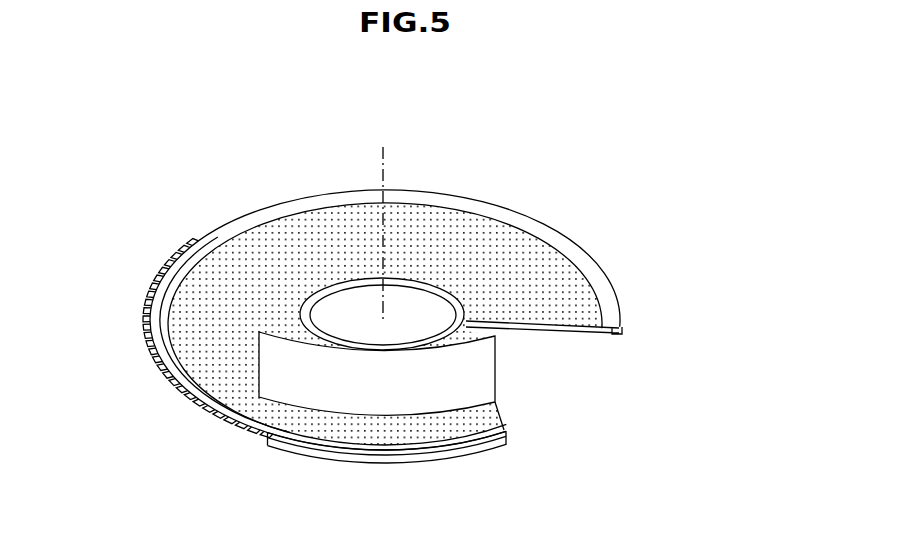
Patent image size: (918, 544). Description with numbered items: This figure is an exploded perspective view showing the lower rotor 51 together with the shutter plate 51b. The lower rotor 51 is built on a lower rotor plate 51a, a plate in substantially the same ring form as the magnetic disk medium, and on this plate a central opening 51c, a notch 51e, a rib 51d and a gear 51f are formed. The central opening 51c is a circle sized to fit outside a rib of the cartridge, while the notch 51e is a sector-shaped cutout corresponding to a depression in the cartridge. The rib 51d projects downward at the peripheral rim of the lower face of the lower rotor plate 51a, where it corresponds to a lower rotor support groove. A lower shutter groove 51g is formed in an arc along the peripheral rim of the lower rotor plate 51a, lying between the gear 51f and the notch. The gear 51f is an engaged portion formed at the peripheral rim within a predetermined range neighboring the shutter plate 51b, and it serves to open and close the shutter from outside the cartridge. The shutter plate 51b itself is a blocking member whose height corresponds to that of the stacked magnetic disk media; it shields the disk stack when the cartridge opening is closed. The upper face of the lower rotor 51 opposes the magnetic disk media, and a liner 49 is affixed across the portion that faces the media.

The lower rotor 51 is at (411, 337).
The lower rotor plate 51a is at (583, 262).
The shutter plate 51b is at (490, 375).
The central opening 51c is at (328, 300).
The rib 51d is at (622, 333).
The notch 51e is at (543, 365).
The gear 51f is at (143, 330).
The lower shutter groove 51g is at (356, 444).
The liner 49 is at (254, 287).